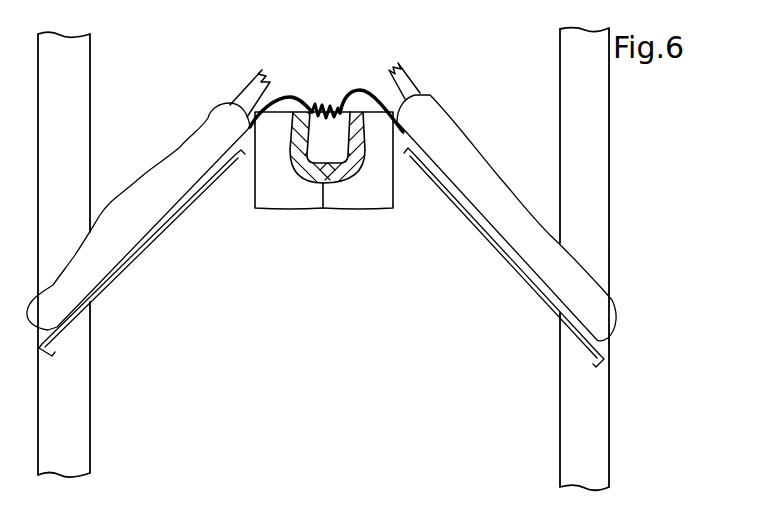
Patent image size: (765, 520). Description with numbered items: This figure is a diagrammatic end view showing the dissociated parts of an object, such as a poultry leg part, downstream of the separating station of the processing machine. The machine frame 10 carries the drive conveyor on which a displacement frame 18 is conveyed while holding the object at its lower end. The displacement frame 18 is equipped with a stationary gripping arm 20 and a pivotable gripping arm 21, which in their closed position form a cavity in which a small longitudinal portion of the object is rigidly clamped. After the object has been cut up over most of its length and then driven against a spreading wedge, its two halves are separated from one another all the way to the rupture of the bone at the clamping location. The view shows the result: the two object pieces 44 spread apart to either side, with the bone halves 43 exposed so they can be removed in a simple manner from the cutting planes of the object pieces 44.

The machine frame 10 is at (67, 62).
The displacement frame 18 is at (323, 231).
The stationary gripping arm 20 is at (363, 198).
The pivotable gripping arm 21 is at (282, 200).
The bone halves 43 is at (257, 93).
The object pieces 44 is at (147, 222).